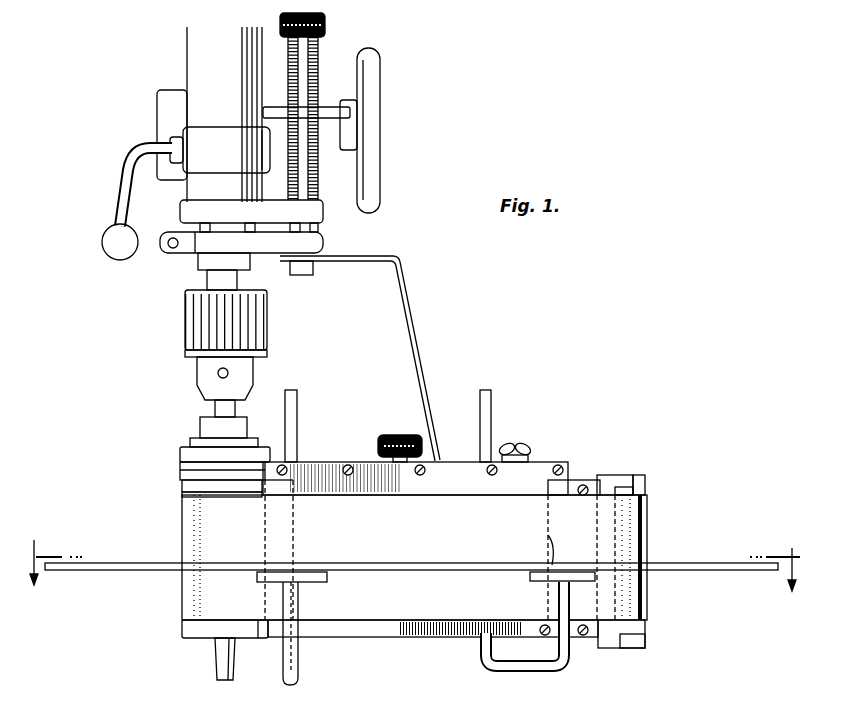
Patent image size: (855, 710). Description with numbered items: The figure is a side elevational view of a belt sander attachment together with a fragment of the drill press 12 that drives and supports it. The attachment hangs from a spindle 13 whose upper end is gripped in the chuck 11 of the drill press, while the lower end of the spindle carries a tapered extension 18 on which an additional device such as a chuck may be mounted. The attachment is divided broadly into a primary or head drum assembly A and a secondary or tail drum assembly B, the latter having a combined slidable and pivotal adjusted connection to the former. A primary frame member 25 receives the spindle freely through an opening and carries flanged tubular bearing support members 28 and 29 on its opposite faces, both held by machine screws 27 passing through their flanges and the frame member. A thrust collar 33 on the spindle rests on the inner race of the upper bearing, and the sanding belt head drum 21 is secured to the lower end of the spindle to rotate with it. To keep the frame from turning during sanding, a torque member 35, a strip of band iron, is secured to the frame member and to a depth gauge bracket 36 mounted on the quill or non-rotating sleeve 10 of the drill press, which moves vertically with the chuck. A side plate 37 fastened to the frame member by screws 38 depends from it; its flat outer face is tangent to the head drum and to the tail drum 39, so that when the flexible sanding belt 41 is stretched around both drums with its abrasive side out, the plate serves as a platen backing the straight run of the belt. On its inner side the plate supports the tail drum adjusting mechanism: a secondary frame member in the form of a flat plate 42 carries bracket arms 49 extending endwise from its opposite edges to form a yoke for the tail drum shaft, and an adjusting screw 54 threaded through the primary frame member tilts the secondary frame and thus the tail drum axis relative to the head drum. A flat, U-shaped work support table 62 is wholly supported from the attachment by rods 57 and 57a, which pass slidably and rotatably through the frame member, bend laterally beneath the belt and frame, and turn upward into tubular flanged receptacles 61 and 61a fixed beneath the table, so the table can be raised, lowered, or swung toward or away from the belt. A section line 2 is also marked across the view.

The drill press 12 is at (183, 62).
The quill or non-rotating sleeve 10 is at (200, 268).
The chuck 11 is at (195, 370).
The spindle 13 is at (212, 408).
The thrust collar 33 is at (205, 422).
The machine screws 27 is at (180, 447).
The upper bearing support member 29 is at (180, 456).
The primary frame member 25 is at (182, 475).
The lower bearing support member 28 is at (182, 490).
The sanding belt 41 is at (182, 540).
The screws 38 is at (348, 465).
The secondary frame member 42 is at (585, 482).
The side plate 37 is at (527, 477).
The adjusting screw 54 is at (398, 433).
The support rod 57 is at (491, 400).
The support rod 57a is at (297, 400).
The torque member 35 is at (413, 318).
The depth gauge bracket 36 is at (318, 228).
The bracket arms 49 is at (612, 477).
The tail drum 39 is at (640, 491).
The work support table 62 is at (118, 571).
The sanding belt head drum 21 is at (182, 626).
The tapered extension 18 is at (218, 658).
The tubular flanged receptacle 61 is at (572, 655).
The tubular flanged receptacle 61a is at (300, 650).
The section line 2- 2 is at (415, 559).
The primary or head drum assembly A is at (302, 461).
The secondary or tail drum assembly B is at (598, 477).